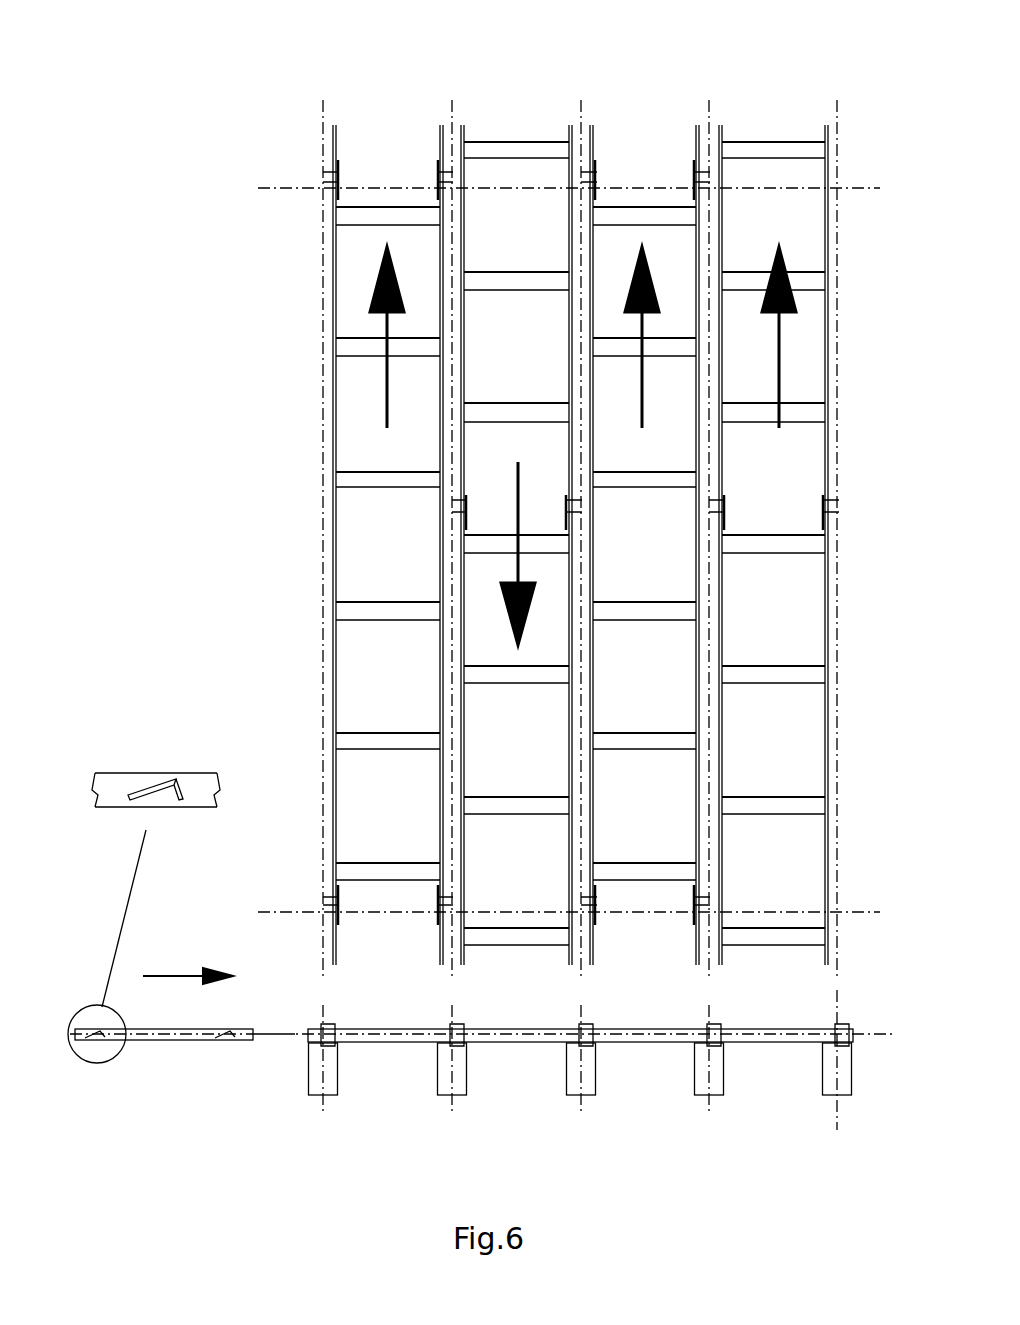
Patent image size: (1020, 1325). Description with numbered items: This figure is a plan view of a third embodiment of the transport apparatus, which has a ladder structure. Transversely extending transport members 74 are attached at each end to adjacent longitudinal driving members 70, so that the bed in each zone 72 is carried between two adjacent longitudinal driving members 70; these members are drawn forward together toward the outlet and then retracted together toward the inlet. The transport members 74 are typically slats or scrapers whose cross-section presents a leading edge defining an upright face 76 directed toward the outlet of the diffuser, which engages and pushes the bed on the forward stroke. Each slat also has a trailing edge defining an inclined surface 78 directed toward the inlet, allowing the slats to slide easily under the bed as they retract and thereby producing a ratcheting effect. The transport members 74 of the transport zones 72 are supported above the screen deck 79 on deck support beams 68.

The deck support beam 68 is at (760, 1128).
The longitudinal driving member 70 is at (700, 665).
The zone 72 is at (752, 128).
The transport member 74 is at (755, 417).
The upright face 76 is at (186, 787).
The inclined surface 78 is at (155, 785).
The screen deck 79 is at (773, 1043).